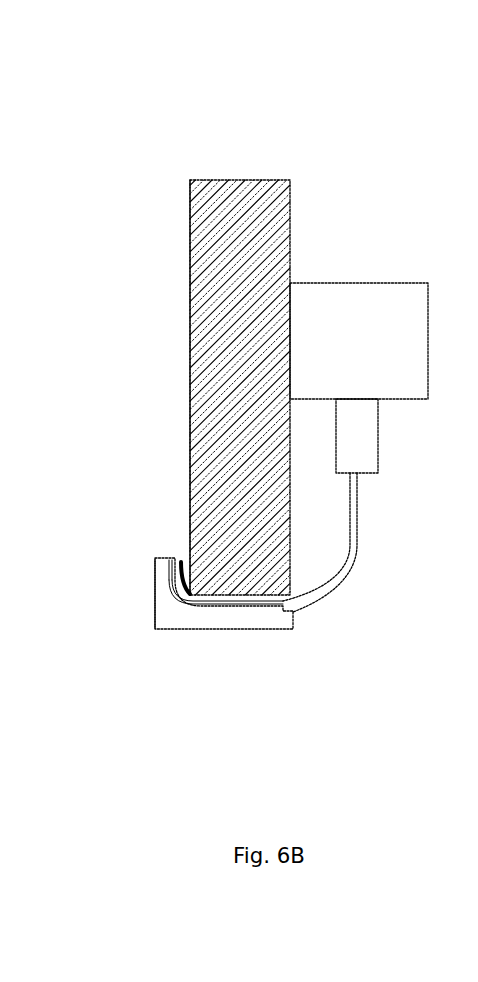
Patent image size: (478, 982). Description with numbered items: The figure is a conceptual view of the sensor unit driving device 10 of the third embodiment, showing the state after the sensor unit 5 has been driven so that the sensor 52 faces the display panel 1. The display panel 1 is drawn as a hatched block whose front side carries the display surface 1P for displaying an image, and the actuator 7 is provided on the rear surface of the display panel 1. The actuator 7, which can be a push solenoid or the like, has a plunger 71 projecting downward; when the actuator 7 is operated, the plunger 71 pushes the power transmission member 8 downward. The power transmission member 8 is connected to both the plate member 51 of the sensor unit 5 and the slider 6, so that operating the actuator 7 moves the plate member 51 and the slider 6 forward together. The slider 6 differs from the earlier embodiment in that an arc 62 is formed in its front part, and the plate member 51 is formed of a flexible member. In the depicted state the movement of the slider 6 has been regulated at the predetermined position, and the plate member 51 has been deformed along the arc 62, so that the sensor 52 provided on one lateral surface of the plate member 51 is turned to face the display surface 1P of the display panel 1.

The sensor unit driving device 10 is at (320, 124).
The display panel 1 is at (233, 180).
The display surface 1P is at (190, 215).
The actuator 7 is at (363, 283).
The plunger 71 is at (382, 442).
The power transmission member 8 is at (322, 595).
The slider 6 is at (199, 619).
The arc 62 is at (158, 593).
The sensor unit 5 is at (150, 549).
The plate member 51 is at (170, 560).
The sensor 52 is at (183, 587).